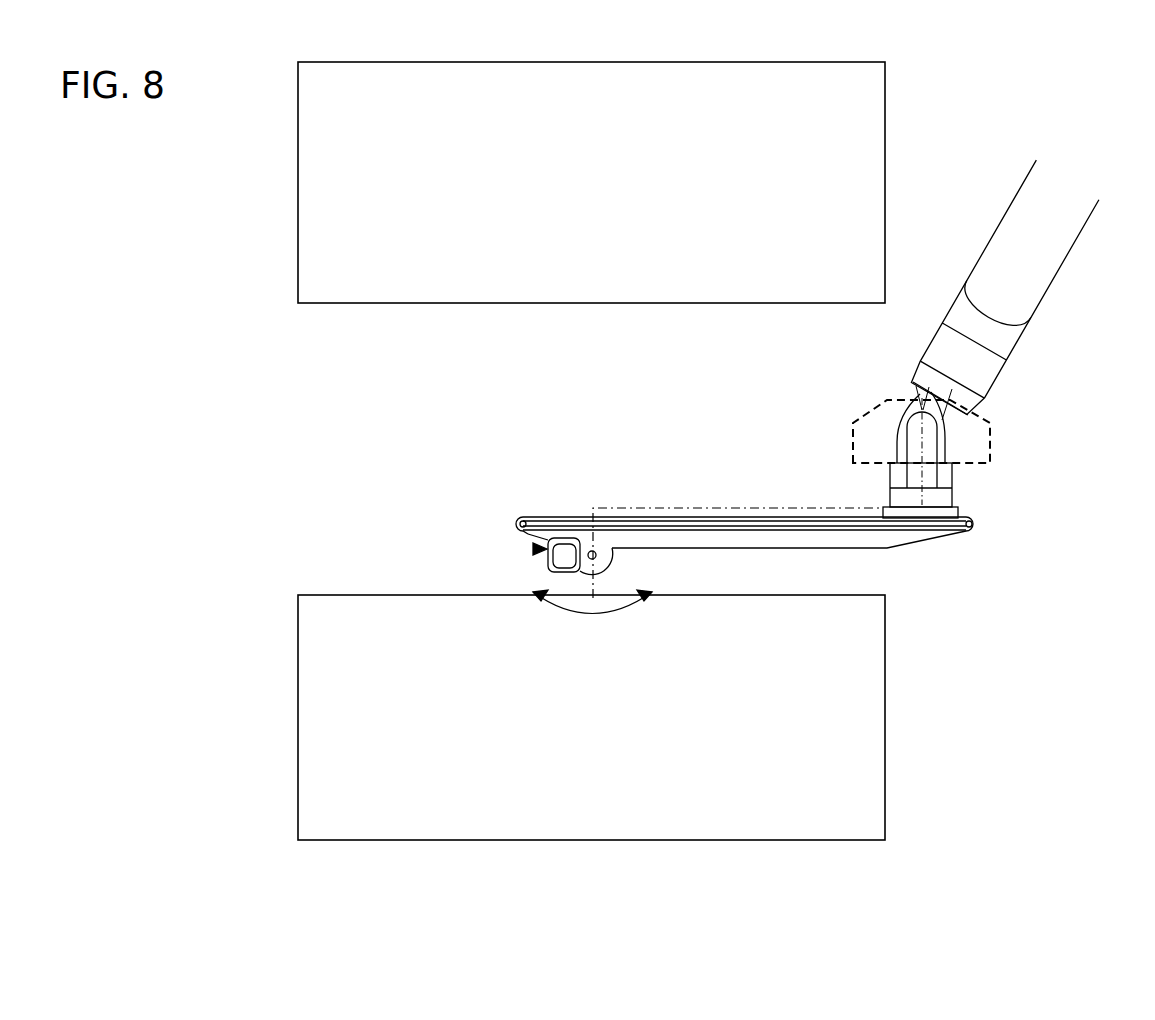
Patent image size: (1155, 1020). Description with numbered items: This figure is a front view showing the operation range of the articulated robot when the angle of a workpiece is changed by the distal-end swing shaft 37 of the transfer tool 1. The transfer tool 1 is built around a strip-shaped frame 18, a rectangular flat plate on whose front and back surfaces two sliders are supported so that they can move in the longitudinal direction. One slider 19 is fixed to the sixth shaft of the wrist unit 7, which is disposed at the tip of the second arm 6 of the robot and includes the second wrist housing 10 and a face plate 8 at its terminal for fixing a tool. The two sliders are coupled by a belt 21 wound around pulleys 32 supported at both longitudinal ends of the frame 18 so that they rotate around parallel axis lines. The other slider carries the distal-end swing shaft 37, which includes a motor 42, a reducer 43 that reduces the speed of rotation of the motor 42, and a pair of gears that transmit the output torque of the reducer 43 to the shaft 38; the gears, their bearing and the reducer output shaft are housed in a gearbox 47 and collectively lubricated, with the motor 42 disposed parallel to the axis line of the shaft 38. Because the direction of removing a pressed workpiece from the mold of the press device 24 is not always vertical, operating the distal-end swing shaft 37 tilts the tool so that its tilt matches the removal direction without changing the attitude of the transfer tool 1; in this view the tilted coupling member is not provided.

The transfer tool 1 is at (613, 476).
The second arm 6 is at (1005, 289).
The wrist unit 7 is at (948, 452).
The face plate 8 is at (889, 496).
The second wrist housing 10 is at (896, 448).
The frame 18 is at (647, 507).
The slider 19 is at (960, 510).
The belt 21 is at (531, 516).
The press device 24 is at (298, 105).
The pulley 32 is at (516, 527).
The distal-end swing shaft 37 is at (533, 549).
The shaft 38 is at (590, 550).
The motor 42 is at (557, 541).
The reducer 43 is at (547, 561).
The gearbox 47 is at (613, 562).